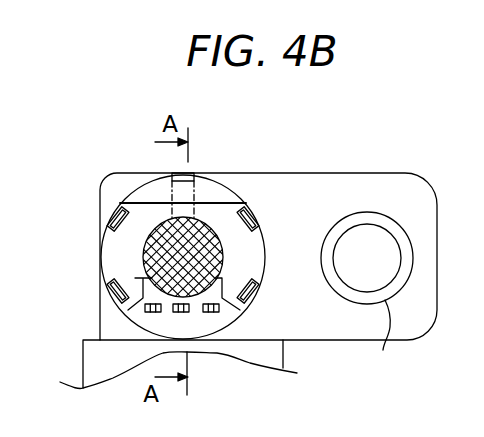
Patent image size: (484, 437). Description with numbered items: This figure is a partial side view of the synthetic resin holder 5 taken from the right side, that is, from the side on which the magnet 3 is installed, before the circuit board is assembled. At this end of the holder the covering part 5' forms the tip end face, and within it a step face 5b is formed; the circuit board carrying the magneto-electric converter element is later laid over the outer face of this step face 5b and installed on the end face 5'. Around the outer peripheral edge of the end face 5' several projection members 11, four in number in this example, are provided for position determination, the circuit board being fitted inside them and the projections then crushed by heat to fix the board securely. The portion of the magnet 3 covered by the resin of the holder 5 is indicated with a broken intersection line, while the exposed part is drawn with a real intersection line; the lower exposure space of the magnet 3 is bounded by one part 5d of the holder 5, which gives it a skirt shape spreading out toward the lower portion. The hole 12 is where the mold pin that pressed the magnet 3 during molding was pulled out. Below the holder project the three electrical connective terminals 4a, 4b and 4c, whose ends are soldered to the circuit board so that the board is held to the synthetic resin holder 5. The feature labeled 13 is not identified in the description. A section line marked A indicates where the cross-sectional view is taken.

The synthetic resin holder 5 is at (268, 235).
The covering part 5' is at (341, 200).
The step face 5b is at (146, 202).
The one part of synthetic resin holder 5d is at (135, 278).
The projection members 11 is at (112, 223).
The hole 12 is at (183, 200).
The notch 13 is at (171, 173).
The magnet 3 is at (222, 278).
The electrical connective terminal 4a is at (153, 312).
The electrical connective terminal 4b is at (185, 312).
The electrical connective terminal 4c is at (215, 312).